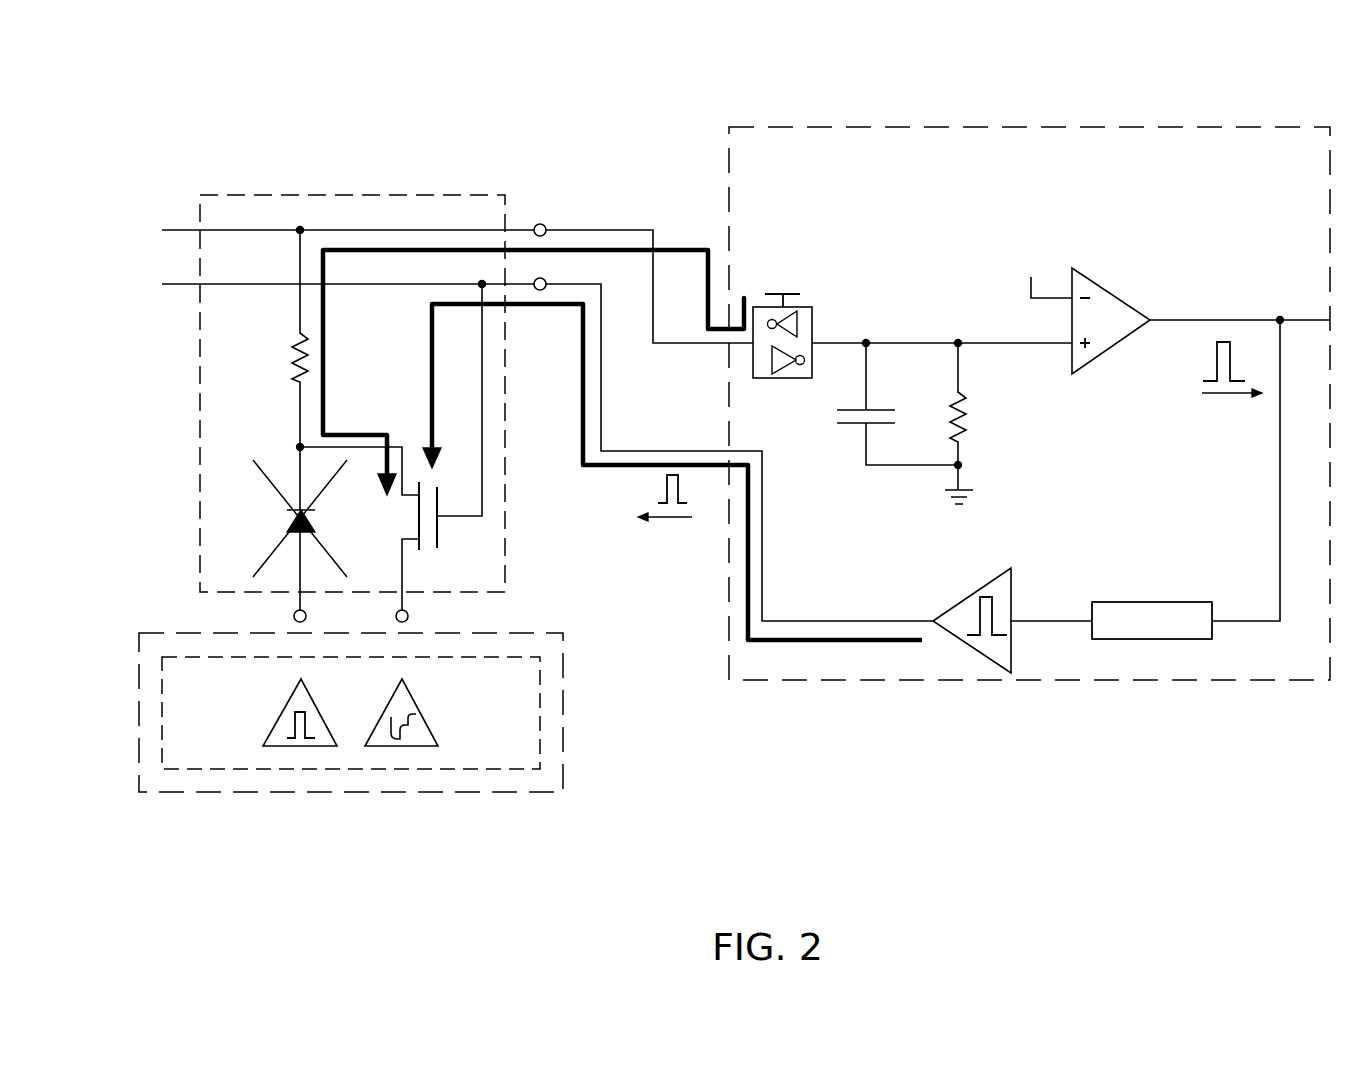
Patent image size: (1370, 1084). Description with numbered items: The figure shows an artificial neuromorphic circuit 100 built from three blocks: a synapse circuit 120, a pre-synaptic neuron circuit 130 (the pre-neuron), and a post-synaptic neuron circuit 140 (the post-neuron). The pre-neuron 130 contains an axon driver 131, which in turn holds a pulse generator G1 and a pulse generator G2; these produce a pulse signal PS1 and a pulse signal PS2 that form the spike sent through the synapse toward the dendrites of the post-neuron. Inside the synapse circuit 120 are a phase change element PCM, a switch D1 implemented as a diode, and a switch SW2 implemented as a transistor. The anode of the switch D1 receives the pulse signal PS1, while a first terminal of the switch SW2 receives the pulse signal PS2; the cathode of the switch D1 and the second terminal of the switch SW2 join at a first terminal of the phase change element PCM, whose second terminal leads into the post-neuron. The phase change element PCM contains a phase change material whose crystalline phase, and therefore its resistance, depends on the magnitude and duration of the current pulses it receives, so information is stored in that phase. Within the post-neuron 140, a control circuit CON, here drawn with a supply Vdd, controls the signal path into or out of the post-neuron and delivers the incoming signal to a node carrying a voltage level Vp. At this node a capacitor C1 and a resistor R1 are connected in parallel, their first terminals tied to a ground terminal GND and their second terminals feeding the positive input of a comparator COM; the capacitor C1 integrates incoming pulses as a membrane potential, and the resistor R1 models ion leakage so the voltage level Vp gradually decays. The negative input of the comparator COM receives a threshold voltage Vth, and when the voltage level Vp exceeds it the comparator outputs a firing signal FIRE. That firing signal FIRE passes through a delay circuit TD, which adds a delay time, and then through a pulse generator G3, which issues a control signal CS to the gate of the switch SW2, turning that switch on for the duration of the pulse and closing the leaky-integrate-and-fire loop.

The artificial neuromorphic circuit 100 is at (175, 128).
The synapse circuit 120 is at (378, 195).
The pre-synaptic neuron circuit 130 is at (563, 655).
The axon driver 131 is at (540, 712).
The post-synaptic neuron circuit 140 is at (1102, 127).
The phase change element PCM is at (265, 338).
The switch D1 is at (293, 527).
The switch SW2 is at (392, 516).
The control signal CS is at (670, 522).
The control circuit CON is at (813, 312).
The supply voltage Vdd is at (776, 286).
The voltage level Vp is at (942, 325).
The capacitor C1 is at (897, 404).
The resistor R1 is at (980, 406).
The ground terminal GND is at (954, 499).
The comparator COM is at (1110, 328).
The threshold voltage Vth is at (1043, 269).
The firing signal FIRE is at (1225, 397).
The delay circuit TD is at (1150, 602).
The pulse generator G3 is at (948, 607).
The pulse generator G1 is at (288, 702).
The pulse generator G2 is at (415, 698).
The pulse signal PS1 is at (290, 725).
The pulse signal PS2 is at (403, 735).